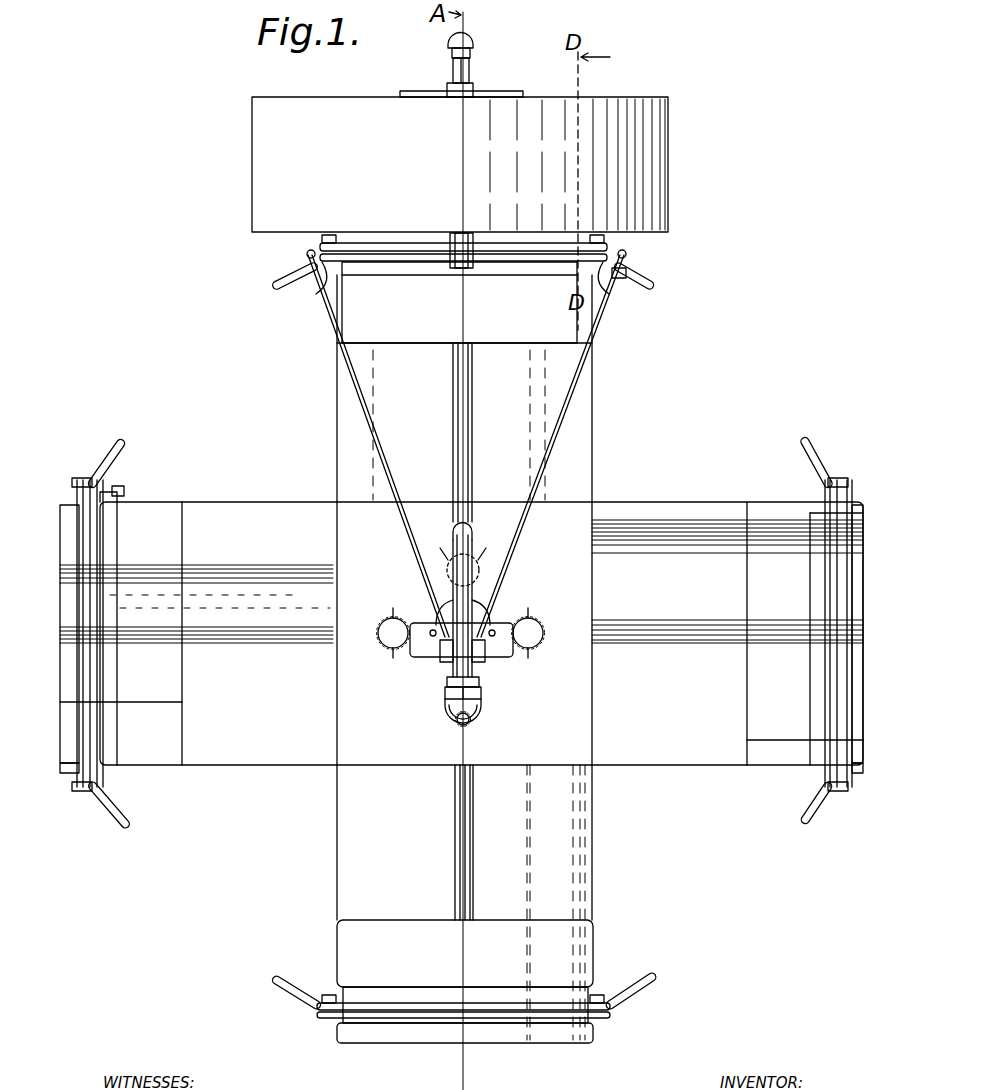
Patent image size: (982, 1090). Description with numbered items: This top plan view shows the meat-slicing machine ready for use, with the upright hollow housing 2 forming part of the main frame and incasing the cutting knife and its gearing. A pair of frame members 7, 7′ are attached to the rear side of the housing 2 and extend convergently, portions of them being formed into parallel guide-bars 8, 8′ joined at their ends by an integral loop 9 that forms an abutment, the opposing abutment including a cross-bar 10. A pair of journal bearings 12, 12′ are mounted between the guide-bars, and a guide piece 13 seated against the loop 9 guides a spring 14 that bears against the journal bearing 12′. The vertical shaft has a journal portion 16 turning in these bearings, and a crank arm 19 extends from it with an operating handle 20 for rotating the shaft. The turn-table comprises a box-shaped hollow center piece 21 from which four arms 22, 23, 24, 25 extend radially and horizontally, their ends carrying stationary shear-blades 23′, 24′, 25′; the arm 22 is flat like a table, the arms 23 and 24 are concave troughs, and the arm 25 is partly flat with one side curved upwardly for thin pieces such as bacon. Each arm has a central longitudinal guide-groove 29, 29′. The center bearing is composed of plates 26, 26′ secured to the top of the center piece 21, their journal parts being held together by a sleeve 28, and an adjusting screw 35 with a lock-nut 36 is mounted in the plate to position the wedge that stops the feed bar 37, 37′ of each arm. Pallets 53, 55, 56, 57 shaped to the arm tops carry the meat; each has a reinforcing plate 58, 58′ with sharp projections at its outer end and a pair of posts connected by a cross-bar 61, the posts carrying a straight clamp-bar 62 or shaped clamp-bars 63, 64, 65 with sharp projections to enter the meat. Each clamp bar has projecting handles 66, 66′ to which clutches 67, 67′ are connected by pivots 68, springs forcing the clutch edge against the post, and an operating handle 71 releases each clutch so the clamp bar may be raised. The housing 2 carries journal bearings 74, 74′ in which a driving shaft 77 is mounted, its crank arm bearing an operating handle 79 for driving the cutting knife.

The upright hollow housing 2 is at (252, 158).
The frame member 7 is at (350, 399).
The frame member 7′ is at (572, 398).
The guide-bar 8 is at (448, 690).
The guide-bar 8′ is at (475, 691).
The integral loop 9 is at (458, 722).
The cross-bar 10 is at (484, 652).
The journal bearing 12 is at (433, 667).
The journal bearing 12′ is at (478, 683).
The guide piece 13 is at (445, 705).
The spring 14 is at (481, 700).
The journal portion 16 is at (445, 683).
The crank arm 19 is at (457, 588).
The operating handle 20 is at (457, 530).
The hollow center piece 21 is at (350, 533).
The arm 22 is at (345, 433).
The arm 23 is at (220, 492).
The stationary shear-blade 23′ is at (58, 695).
The arm 24 is at (660, 502).
The stationary shear-blade 24′ is at (868, 742).
The arm 25 is at (337, 840).
The stationary shear-blade 25′ is at (397, 1043).
The plate 26 is at (487, 623).
The plate 26′ is at (430, 652).
The sleeve 28 is at (487, 592).
The guide-groove 29 is at (453, 395).
The guide-groove 29′ is at (455, 797).
The adjusting screw 35 is at (537, 624).
The lock-nut 36 is at (540, 652).
The feed bar 37 is at (463, 412).
The feed bar 37′ is at (470, 855).
The pallet 53 is at (397, 330).
The pallet 55 is at (148, 518).
The pallet 56 is at (755, 510).
The pallet 57 is at (347, 935).
The reinforcing plate 58 is at (397, 272).
The bar 58′ is at (112, 642).
The cross-bar 61 is at (425, 262).
The clamp-bar 62 is at (370, 248).
The clamp-bar 63 is at (80, 538).
The clamp-bar 64 is at (843, 693).
The clamp-bar 65 is at (420, 1017).
The projecting handle 66 is at (643, 288).
The projecting handle 66′ is at (292, 272).
The clutch 67 is at (597, 302).
The clutch 67′ is at (320, 292).
The pivot 68 is at (112, 482).
The operating handle 71 is at (655, 287).
The journal bearing 74 is at (447, 90).
The journal bearing 74′ is at (477, 270).
The driving shaft 77 is at (474, 72).
The operating handle 79 is at (474, 38).